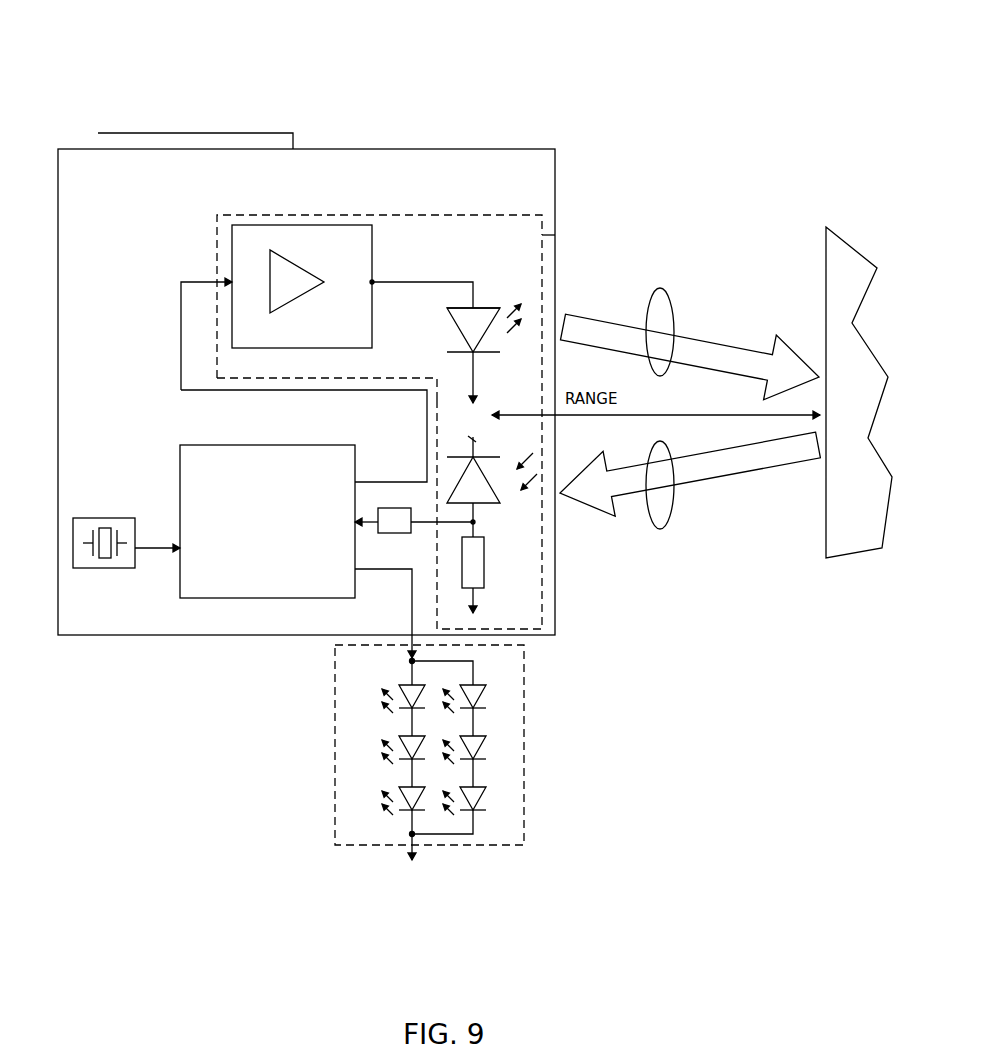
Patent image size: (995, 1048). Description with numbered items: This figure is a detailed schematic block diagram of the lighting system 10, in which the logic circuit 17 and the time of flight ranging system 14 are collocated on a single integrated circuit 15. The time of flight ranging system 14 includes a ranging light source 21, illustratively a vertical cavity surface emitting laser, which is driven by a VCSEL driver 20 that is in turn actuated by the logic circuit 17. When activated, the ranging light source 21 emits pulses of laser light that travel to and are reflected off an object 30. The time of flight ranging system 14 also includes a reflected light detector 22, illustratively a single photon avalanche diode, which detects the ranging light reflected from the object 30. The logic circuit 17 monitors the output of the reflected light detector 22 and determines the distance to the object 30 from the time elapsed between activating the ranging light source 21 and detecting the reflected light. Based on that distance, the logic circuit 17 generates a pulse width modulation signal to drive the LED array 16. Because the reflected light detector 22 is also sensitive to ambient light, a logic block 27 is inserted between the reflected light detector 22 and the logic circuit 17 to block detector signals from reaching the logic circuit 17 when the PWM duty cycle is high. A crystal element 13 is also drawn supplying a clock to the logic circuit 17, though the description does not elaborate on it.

The system 10 is at (566, 56).
The crystal oscillator 13 is at (73, 568).
The time of flight ranging system 14 is at (555, 235).
The integrated circuit 15 is at (512, 149).
The LED array 16 is at (335, 705).
The logic circuit 17 is at (215, 598).
The VCSEL driver 20 is at (343, 225).
The ranging light source 21 is at (492, 306).
The reflected light detector 22 is at (493, 503).
The logic block 27 is at (414, 520).
The object 30 is at (826, 240).